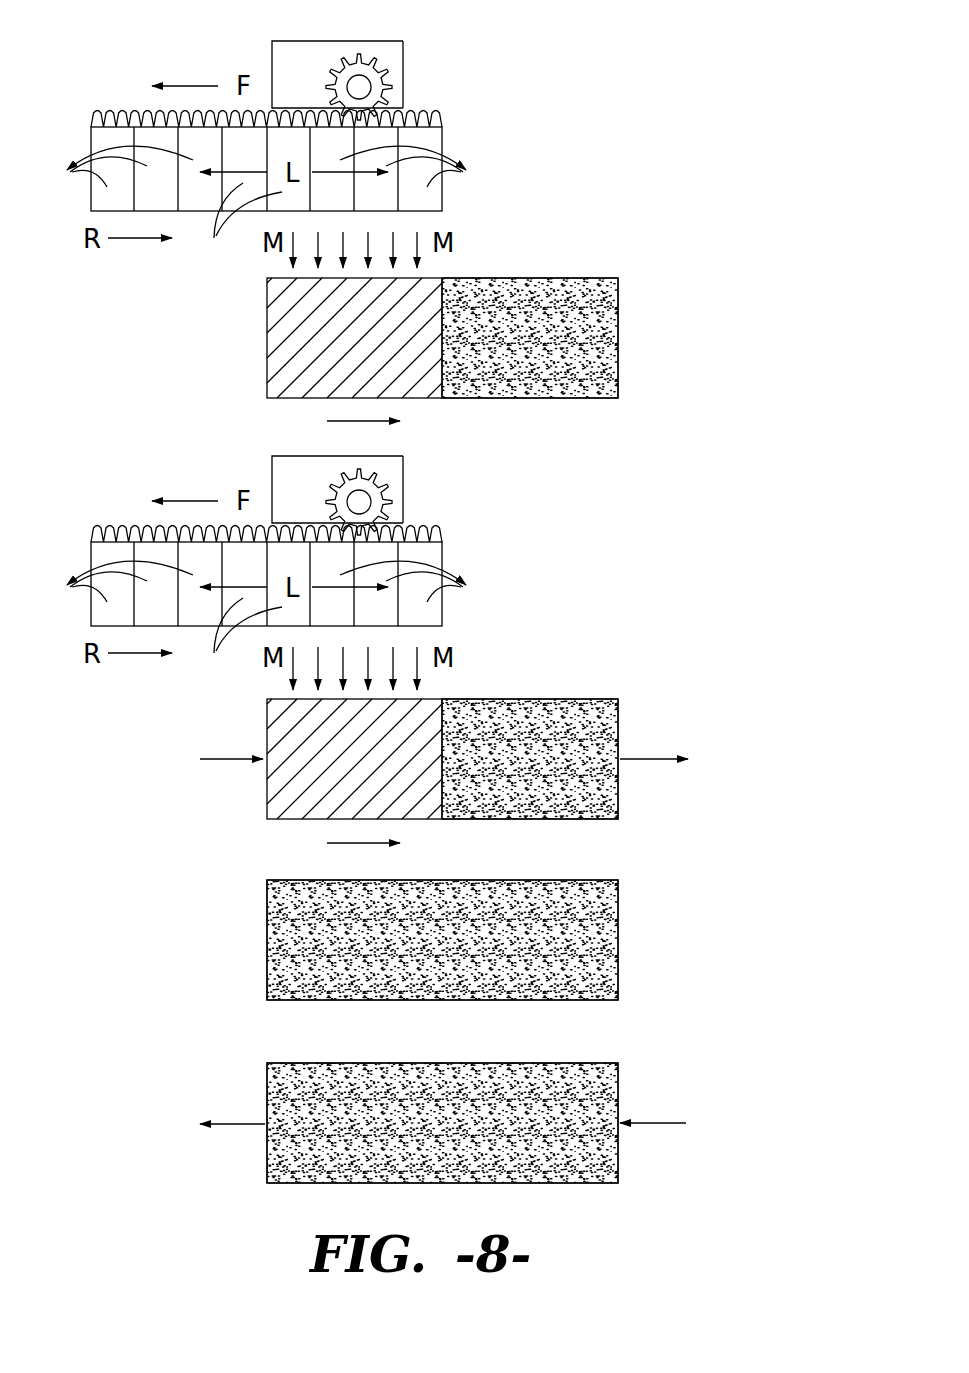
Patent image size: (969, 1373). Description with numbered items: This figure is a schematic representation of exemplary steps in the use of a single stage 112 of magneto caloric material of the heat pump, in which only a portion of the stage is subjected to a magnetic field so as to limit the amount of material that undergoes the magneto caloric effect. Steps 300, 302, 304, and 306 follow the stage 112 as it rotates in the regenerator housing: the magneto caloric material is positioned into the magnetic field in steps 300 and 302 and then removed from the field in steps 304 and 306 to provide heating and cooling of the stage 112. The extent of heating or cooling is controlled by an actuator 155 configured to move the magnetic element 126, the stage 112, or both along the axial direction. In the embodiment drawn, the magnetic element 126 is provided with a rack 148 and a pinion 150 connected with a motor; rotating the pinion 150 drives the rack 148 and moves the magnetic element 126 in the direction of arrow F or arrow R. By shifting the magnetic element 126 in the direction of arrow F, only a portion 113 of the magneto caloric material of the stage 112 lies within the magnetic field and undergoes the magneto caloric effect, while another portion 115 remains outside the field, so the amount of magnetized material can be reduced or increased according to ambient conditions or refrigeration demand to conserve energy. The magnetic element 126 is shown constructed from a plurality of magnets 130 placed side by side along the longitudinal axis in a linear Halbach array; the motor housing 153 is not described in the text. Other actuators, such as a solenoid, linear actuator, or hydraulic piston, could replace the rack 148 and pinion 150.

The stage 112 is at (263, 370).
The portion 113 is at (418, 380).
The portion 115 is at (573, 375).
The magnetic element 126 is at (88, 140).
The magnets 130 is at (269, 405).
The rack 148 is at (115, 112).
The pinion 150 is at (370, 63).
The motor 153 is at (271, 62).
The actuator 155 is at (412, 75).
The step 300 is at (638, 328).
The step 302 is at (637, 720).
The step 304 is at (635, 950).
The step 306 is at (638, 1090).